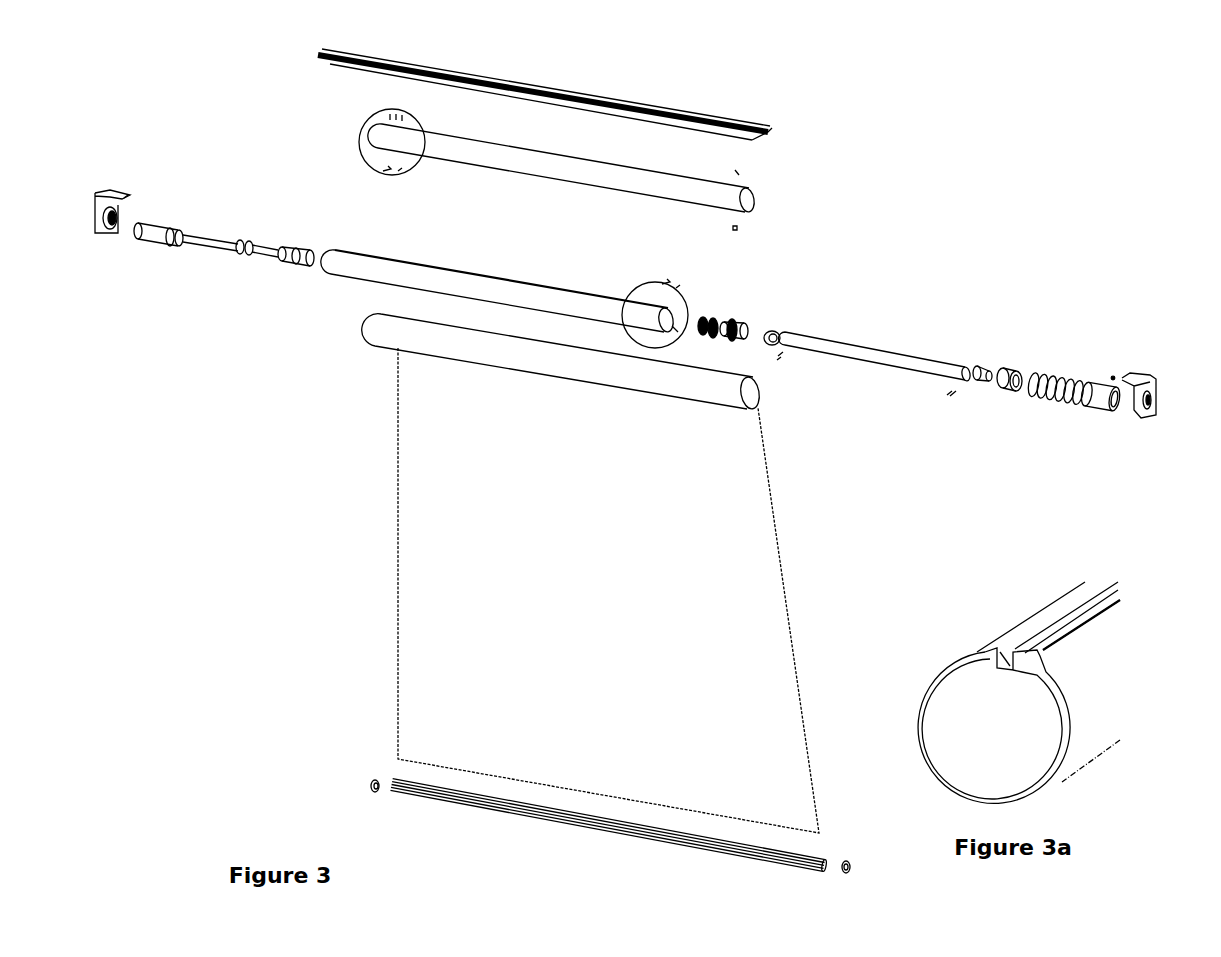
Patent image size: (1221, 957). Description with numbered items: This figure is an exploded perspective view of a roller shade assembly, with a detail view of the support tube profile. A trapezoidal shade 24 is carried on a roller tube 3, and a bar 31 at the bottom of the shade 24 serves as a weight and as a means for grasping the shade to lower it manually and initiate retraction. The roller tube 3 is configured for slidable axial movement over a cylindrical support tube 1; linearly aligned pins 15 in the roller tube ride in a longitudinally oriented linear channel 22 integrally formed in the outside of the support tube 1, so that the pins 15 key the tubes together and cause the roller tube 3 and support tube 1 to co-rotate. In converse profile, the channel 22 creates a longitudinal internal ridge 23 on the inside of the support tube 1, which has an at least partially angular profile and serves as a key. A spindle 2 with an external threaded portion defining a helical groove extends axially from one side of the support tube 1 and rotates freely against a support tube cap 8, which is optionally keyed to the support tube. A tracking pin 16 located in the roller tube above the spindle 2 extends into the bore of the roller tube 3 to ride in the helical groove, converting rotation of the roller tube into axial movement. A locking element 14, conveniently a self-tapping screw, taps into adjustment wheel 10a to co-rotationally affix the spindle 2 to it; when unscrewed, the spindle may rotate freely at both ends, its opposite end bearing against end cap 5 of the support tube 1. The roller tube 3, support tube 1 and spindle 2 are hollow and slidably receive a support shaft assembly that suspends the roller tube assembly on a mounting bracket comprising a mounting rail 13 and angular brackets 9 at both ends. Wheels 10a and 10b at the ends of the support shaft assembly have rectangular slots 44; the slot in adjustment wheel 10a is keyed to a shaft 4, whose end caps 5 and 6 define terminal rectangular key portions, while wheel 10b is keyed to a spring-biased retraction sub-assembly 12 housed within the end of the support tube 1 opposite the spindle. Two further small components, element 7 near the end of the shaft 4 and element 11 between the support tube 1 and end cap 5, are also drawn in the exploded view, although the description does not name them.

In FIG. 3, the support tube 1 is at (545, 300).
In FIG. 3, the spindle 2 is at (1055, 378).
In FIG. 3, the roller tube 3 is at (543, 156).
In FIG. 3, the shaft 4 is at (857, 353).
In FIG. 3, the end cap 5 is at (781, 334).
In FIG. 3, the end cap 6 is at (983, 368).
In FIG. 3, the pin 7 is at (960, 396).
In FIG. 3, the support tube cap 8 is at (1012, 372).
In FIG. 3, the angular bracket 9 is at (1158, 398).
In FIG. 3, the adjustment wheel 10a is at (1153, 412).
In FIG. 3, the wheel 10b is at (106, 240).
In FIG. 3, the gear assembly 11 is at (730, 312).
In FIG. 3, the sub-assembly 12 is at (210, 232).
In FIG. 3, the mounting rail 13 is at (621, 106).
In FIG. 3, the locking element 14 is at (1110, 372).
In FIG. 3, the pins 15 is at (386, 116).
In FIG. 3, the pin 16 is at (741, 172).
In FIG. 3A, the linear channel 22 is at (1010, 660).
In FIG. 3, the longitudinal internal ridge 23 is at (677, 332).
In FIG. 3A, the longitudinal internal ridge 23 is at (1046, 683).
In FIG. 3, the shade 24 is at (512, 562).
In FIG. 3, the bar 31 is at (452, 810).
In FIG. 3, the slot 44 is at (127, 196).